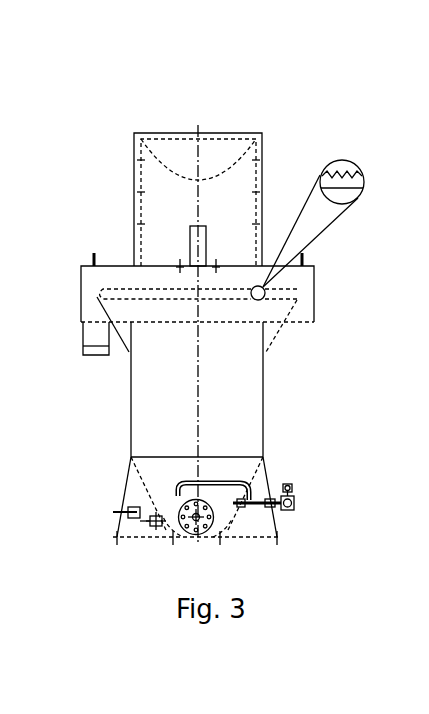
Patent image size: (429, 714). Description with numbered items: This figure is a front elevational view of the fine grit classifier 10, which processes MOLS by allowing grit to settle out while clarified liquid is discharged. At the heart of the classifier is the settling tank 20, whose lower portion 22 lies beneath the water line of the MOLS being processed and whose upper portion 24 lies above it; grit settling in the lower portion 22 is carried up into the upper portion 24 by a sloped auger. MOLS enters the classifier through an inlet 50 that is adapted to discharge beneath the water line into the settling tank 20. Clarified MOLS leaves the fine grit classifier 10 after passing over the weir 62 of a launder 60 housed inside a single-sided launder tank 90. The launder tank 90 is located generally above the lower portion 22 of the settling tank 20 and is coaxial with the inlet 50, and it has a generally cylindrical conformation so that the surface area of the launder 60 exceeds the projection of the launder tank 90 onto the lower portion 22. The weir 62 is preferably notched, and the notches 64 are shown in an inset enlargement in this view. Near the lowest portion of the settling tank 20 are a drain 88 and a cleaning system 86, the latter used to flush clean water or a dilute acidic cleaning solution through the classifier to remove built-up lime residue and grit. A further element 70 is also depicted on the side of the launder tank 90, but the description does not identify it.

The fine grit classifier 10 is at (157, 111).
The settling tank 20 is at (244, 404).
The lower portion 22 is at (150, 400).
The upper portion 24 is at (152, 202).
The inlet 50 is at (205, 233).
The launder 60 is at (297, 294).
The weir 62 is at (298, 288).
The notches 64 is at (342, 173).
The side unit 70 is at (91, 358).
The cleaning system 86 is at (290, 472).
The drain 88 is at (128, 513).
The launder tank 90 is at (123, 292).